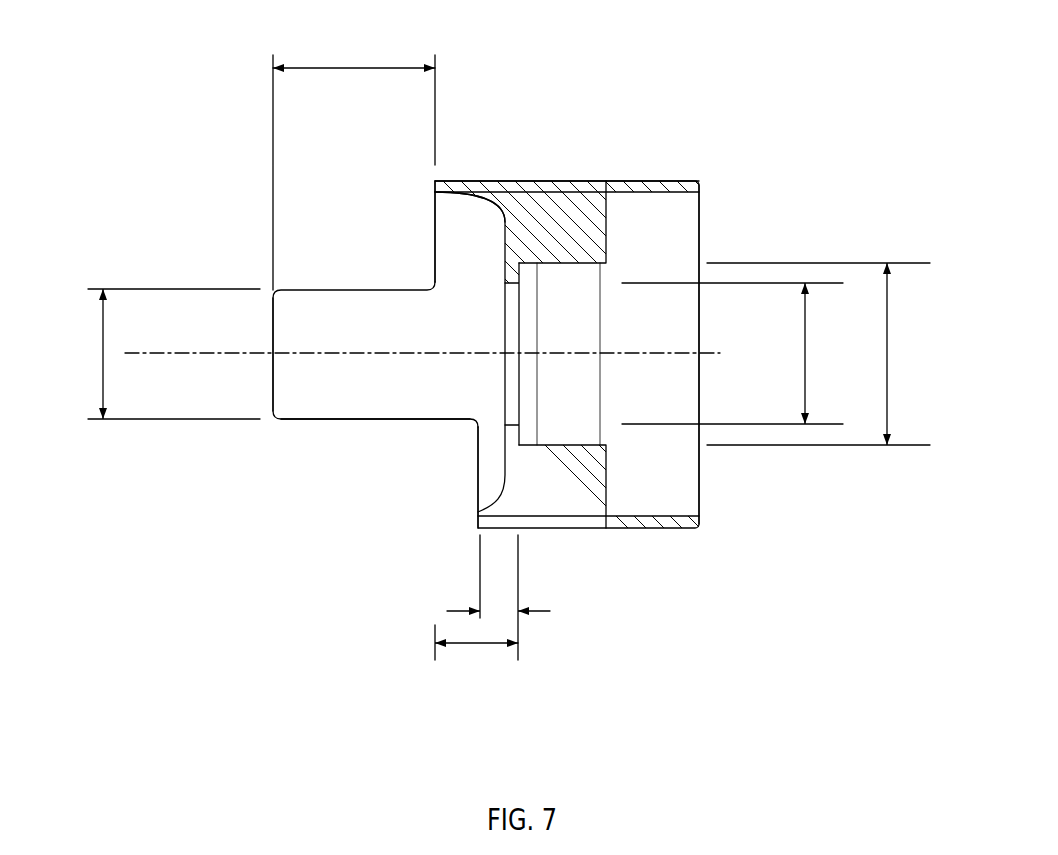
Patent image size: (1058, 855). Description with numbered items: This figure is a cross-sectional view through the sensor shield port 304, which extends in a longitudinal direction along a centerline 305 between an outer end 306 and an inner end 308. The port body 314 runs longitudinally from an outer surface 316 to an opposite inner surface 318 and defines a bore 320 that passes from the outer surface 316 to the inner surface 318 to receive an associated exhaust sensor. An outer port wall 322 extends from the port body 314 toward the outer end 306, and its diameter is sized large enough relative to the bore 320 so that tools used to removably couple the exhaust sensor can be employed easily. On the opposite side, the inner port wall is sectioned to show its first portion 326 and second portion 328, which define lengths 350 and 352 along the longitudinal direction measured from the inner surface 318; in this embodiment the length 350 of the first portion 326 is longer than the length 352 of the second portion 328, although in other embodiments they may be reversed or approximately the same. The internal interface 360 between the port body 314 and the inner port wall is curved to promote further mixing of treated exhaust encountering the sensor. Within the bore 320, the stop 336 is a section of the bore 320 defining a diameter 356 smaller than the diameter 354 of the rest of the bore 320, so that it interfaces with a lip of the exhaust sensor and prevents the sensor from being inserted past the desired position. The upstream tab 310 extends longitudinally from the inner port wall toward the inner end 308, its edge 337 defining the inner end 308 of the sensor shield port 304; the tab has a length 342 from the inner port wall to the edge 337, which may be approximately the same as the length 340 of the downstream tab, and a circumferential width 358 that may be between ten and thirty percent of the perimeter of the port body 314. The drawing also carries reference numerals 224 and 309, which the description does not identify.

The end face 224 is at (448, 190).
The sensor shield port 304 is at (704, 130).
The centerline 305 is at (385, 350).
The outer end 306 is at (702, 218).
The inner end 308 is at (268, 421).
The head portion 309 is at (459, 52).
The upstream tab 310 is at (350, 421).
The port body 314 is at (562, 180).
The outer surface 316 is at (606, 487).
The inner surface 318 is at (505, 258).
The bore 320 is at (645, 318).
The outer port wall 322 is at (650, 530).
The first portion of inner port wall 326 is at (435, 243).
The second portion of inner port wall 328 is at (478, 452).
The stop 336 is at (520, 438).
The edge of upstream tab 337 is at (273, 316).
The length of downstream tab 340 is at (358, 65).
The length of upstream tab 342 is at (354, 172).
The length of first portion 350 is at (480, 648).
The length of second portion 352 is at (457, 605).
The diameter of bore 354 is at (888, 362).
The diameter of stop 356 is at (806, 362).
The circumferential width of upstream tab 358 is at (103, 368).
The internal interface 360 is at (490, 190).